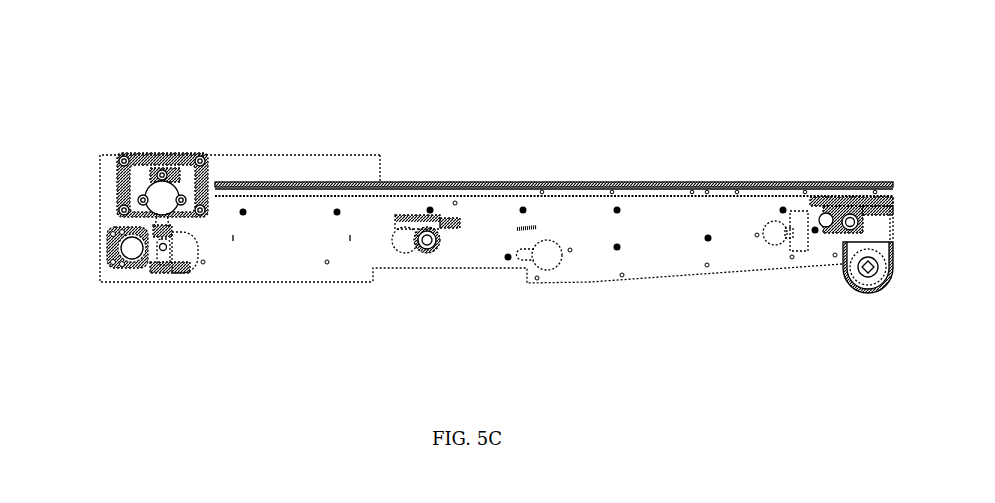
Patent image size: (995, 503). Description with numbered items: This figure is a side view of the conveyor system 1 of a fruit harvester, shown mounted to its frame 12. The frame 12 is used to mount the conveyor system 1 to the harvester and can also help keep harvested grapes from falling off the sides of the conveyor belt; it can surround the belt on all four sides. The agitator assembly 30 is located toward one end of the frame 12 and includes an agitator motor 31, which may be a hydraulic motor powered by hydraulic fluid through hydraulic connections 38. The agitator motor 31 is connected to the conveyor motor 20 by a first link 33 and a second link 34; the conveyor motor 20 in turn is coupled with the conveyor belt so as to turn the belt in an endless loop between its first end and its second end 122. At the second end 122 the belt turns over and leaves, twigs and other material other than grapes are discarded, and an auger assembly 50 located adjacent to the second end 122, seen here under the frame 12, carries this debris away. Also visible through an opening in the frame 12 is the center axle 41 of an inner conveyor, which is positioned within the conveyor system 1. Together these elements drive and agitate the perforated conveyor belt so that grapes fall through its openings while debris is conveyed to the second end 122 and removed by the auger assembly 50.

The conveyor system 1 is at (148, 86).
The frame 12 is at (520, 190).
The second end 122 is at (888, 183).
The conveyor motor 20 is at (125, 250).
The agitator assembly 30 is at (112, 188).
The agitator motor 31 is at (167, 195).
The first link 33 is at (172, 228).
The second link 34 is at (148, 262).
The hydraulic connections 38 is at (163, 163).
The center axle 41 is at (425, 243).
The auger assembly 50 is at (831, 277).